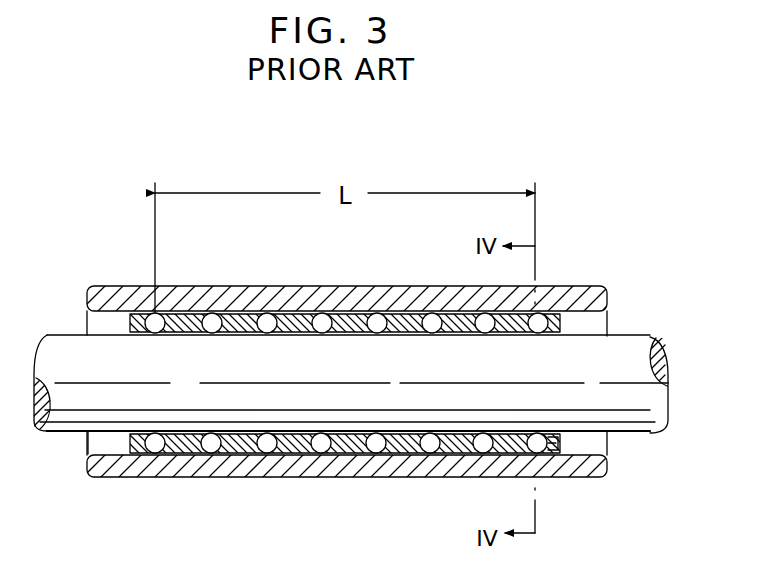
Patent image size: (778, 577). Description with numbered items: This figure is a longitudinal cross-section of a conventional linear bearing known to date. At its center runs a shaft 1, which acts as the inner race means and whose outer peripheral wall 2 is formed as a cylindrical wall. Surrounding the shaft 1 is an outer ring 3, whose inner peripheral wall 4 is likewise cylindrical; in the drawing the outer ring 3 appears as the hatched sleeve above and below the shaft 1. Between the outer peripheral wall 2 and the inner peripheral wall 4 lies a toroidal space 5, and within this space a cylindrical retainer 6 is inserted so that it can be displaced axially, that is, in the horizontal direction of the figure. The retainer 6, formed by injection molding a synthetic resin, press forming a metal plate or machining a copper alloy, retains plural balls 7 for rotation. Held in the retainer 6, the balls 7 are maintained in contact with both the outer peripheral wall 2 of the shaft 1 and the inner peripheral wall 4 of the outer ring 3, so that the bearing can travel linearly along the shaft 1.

The shaft 1 is at (673, 402).
The outer peripheral wall 2 is at (617, 351).
The outer ring 3 is at (608, 470).
The inner peripheral wall 4 is at (390, 455).
The toroidal space 5 is at (92, 438).
The cylindrical retainer 6 is at (560, 443).
The balls 7 is at (318, 313).